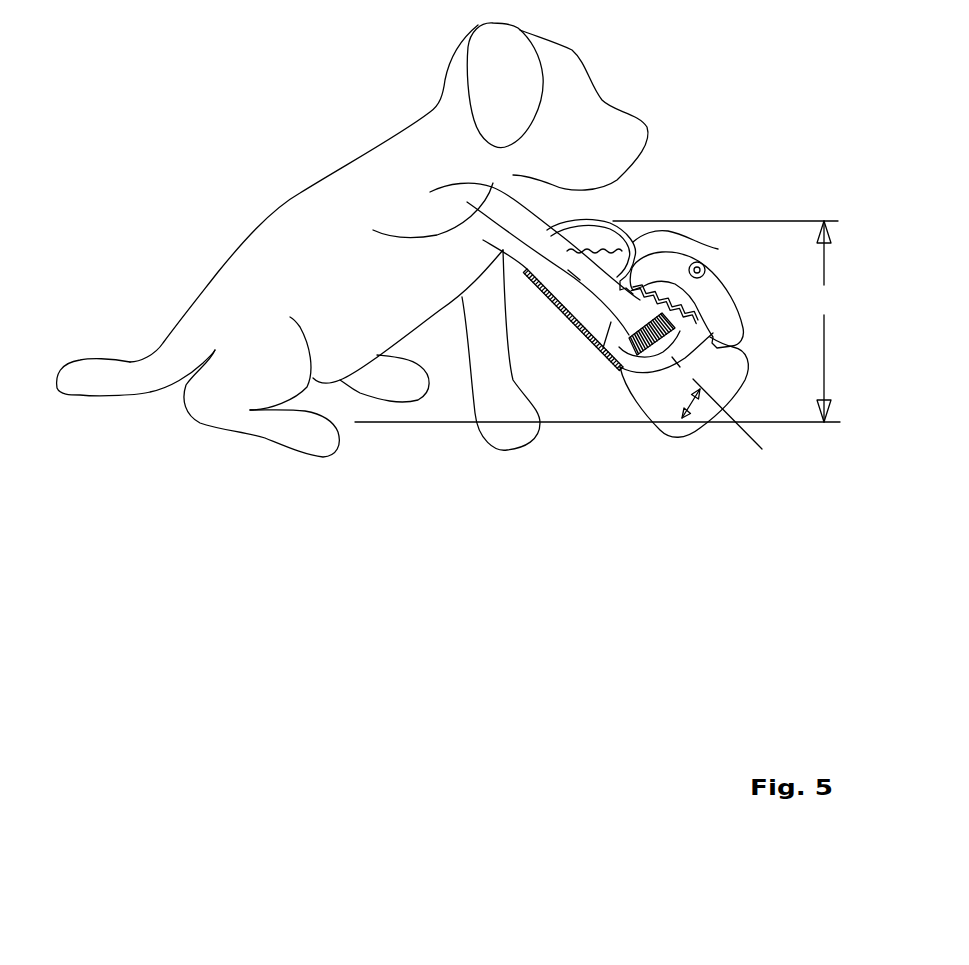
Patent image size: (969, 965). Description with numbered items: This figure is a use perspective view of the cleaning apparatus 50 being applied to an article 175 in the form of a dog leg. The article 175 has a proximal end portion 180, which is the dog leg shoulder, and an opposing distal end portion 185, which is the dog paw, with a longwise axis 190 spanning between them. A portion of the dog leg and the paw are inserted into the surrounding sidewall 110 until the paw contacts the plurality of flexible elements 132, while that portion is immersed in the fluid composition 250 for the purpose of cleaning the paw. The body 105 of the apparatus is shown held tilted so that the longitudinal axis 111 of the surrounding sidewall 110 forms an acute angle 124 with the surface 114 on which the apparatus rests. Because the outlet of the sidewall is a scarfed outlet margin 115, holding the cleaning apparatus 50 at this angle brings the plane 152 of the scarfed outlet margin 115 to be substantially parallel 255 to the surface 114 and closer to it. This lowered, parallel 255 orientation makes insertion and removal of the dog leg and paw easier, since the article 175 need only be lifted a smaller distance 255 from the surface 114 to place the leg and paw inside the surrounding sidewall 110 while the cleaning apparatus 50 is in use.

The cleaning apparatus 50 is at (737, 150).
The base body 105 is at (740, 373).
The surrounding sidewall 110 is at (578, 321).
The longitudinal axis 111 is at (750, 437).
The surface 114 is at (793, 423).
The scarfed outlet margin 115 is at (692, 289).
The acute angle 124 is at (690, 422).
The plurality of flexible elements 132 is at (723, 348).
The plane 152 is at (737, 221).
The article 175 is at (537, 240).
The proximal end portion 180 is at (500, 213).
The distal end portion 185 is at (608, 363).
The longwise axis 190 is at (373, 230).
The fluid composition 250 is at (595, 250).
The parallel 255 is at (815, 321).